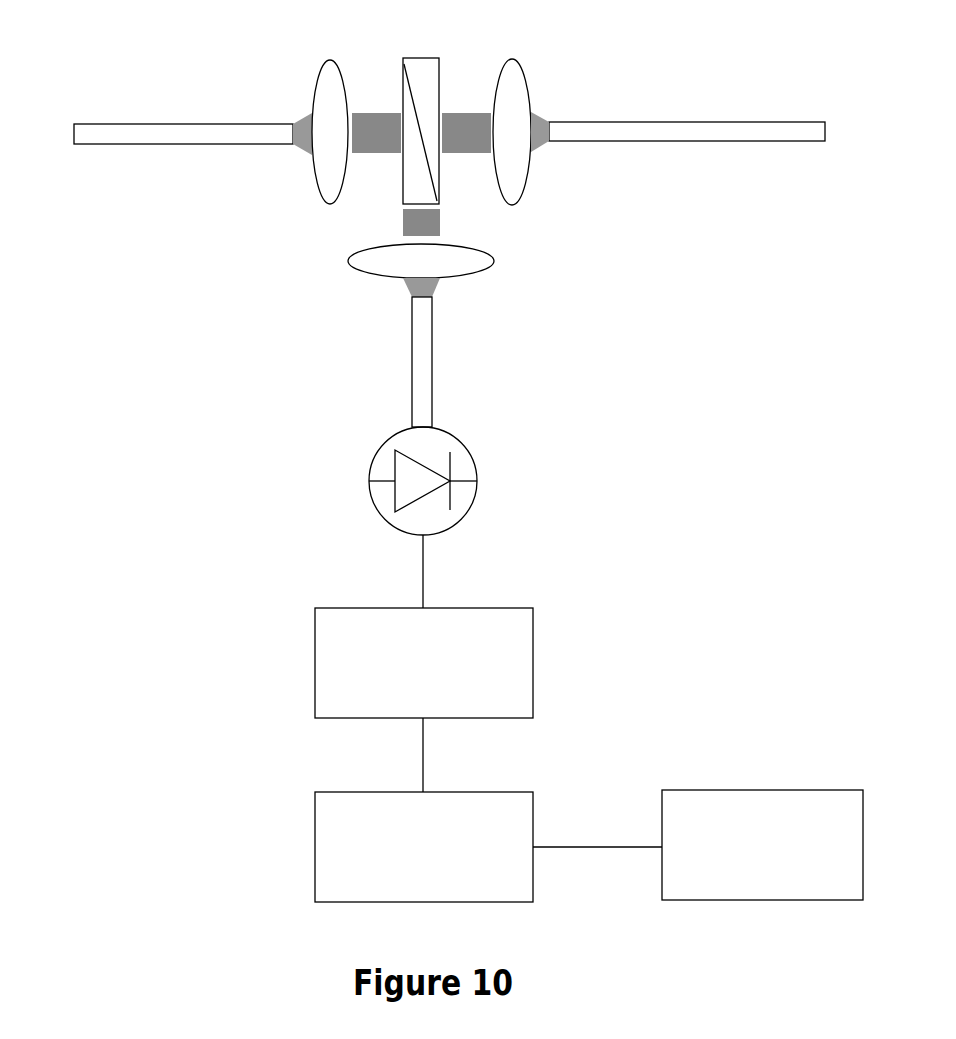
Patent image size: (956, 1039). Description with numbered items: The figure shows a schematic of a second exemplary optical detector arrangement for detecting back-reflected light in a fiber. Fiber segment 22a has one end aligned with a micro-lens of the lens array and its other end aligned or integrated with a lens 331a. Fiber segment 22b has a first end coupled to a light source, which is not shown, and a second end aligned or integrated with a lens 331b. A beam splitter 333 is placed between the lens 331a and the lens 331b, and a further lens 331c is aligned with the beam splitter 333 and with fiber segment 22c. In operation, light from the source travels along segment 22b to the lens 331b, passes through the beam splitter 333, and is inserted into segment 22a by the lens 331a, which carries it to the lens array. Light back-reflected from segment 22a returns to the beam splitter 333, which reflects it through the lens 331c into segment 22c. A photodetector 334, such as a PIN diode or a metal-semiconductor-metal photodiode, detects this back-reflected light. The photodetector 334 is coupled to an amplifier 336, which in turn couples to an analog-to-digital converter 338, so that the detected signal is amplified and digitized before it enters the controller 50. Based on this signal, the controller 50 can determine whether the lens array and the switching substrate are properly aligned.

The fiber segment 22a is at (218, 123).
The fiber segment 22b is at (602, 121).
The fiber segment 22c is at (420, 390).
The lens 331a is at (329, 61).
The lens 331b is at (512, 61).
The lens 331c is at (494, 260).
The beam splitter 333 is at (440, 58).
The photodetector 334 is at (457, 463).
The amplifier 336 is at (424, 663).
The analog-to-digital converter 338 is at (424, 847).
The controller 50 is at (762, 845).